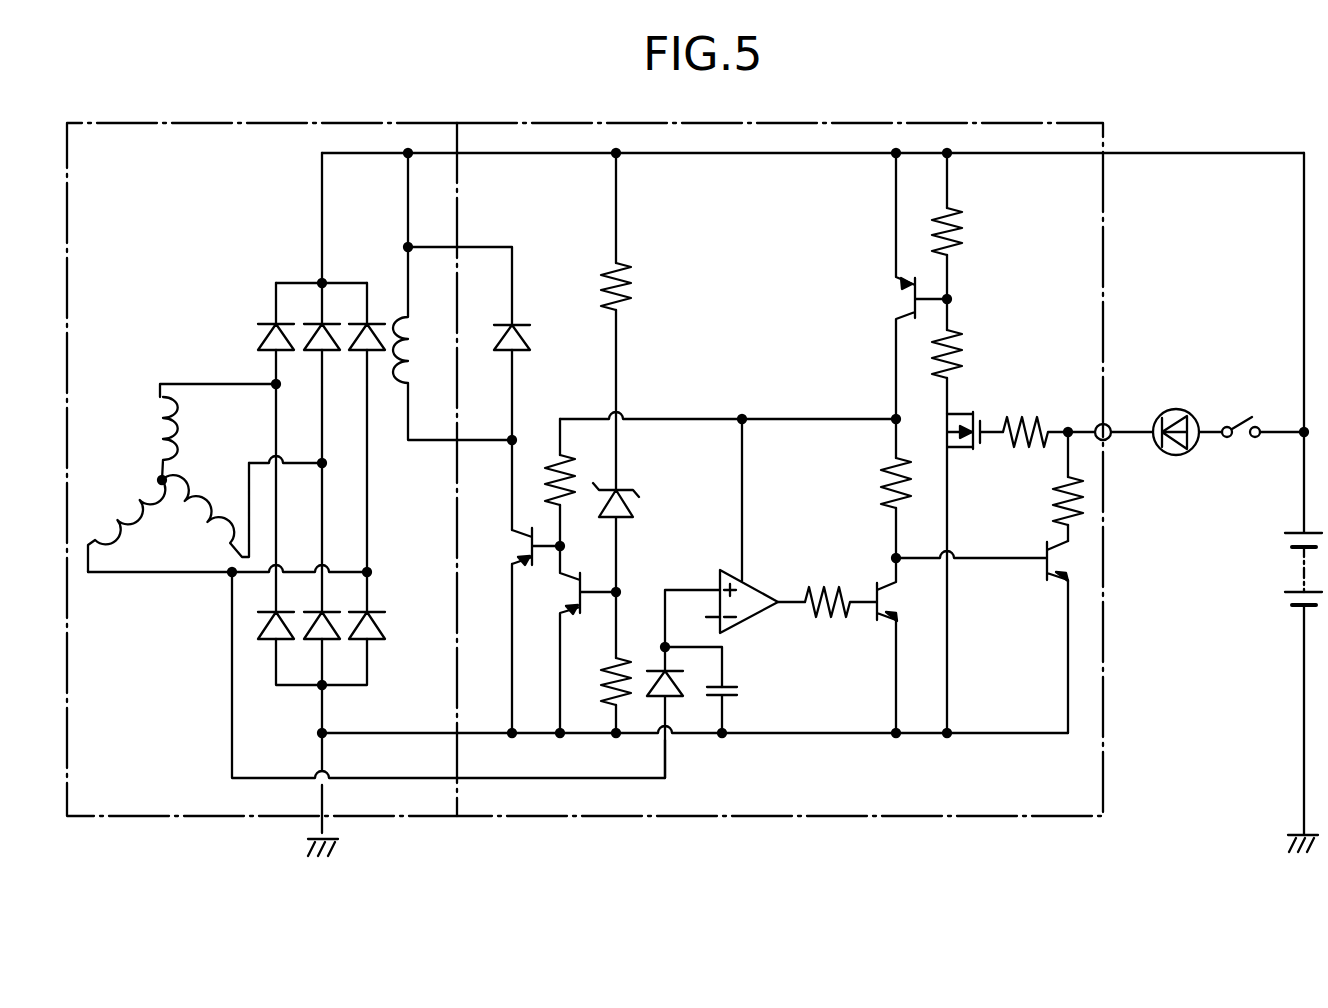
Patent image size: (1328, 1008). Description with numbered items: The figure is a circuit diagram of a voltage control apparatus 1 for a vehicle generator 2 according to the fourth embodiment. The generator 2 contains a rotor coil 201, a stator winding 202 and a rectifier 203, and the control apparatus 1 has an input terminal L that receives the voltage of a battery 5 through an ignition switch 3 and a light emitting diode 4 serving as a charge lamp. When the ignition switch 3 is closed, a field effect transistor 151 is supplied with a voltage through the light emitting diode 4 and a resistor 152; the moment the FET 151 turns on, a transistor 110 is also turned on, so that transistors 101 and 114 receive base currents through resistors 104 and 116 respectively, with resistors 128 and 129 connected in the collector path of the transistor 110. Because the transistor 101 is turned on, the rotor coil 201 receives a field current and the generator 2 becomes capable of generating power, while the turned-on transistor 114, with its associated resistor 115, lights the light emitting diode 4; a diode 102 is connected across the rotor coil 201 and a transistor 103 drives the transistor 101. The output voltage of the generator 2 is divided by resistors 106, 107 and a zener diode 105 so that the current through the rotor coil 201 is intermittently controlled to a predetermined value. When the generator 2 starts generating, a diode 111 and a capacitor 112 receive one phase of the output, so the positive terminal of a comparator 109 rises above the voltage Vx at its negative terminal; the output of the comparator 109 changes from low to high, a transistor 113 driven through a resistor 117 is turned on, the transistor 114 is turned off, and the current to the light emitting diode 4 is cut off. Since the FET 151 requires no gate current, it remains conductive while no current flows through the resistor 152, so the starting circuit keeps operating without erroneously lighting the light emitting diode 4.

The voltage control apparatus 1 is at (533, 820).
The vehicle generator 2 is at (145, 820).
The ignition switch 3 is at (1238, 412).
The light emitting diode 4 is at (1183, 410).
The battery 5 is at (1285, 548).
The transistor 101 is at (525, 572).
The diode 102 is at (533, 335).
The transistor 103 is at (583, 609).
The resistor 104 is at (565, 452).
The zener diode 105 is at (630, 485).
The resistor 106 is at (640, 280).
The resistor 107 is at (622, 655).
The comparator 109 is at (760, 617).
The transistor 110 is at (900, 302).
The diode 111 is at (670, 697).
The capacitor 112 is at (727, 693).
The transistor 113 is at (895, 610).
The transistor 114 is at (1040, 575).
The resistor 115 is at (1058, 512).
The resistor 116 is at (880, 468).
The resistor 117 is at (816, 586).
The resistor 128 is at (965, 225).
The resistor 129 is at (965, 347).
The field effect transistor 151 is at (962, 450).
The resistor 152 is at (1044, 410).
The rotor coil 201 is at (404, 320).
The stator coil 202 is at (157, 480).
The rectifier 203 is at (292, 363).
The input terminal L is at (1108, 445).